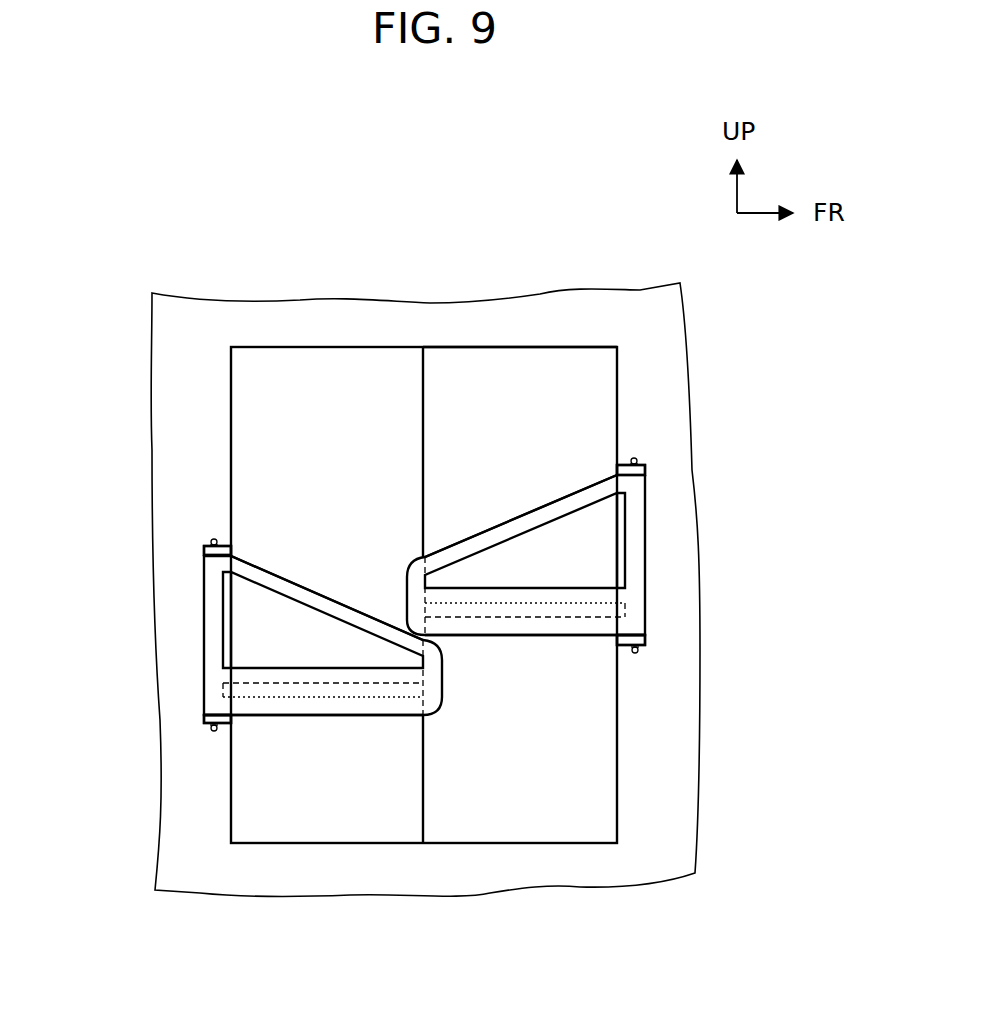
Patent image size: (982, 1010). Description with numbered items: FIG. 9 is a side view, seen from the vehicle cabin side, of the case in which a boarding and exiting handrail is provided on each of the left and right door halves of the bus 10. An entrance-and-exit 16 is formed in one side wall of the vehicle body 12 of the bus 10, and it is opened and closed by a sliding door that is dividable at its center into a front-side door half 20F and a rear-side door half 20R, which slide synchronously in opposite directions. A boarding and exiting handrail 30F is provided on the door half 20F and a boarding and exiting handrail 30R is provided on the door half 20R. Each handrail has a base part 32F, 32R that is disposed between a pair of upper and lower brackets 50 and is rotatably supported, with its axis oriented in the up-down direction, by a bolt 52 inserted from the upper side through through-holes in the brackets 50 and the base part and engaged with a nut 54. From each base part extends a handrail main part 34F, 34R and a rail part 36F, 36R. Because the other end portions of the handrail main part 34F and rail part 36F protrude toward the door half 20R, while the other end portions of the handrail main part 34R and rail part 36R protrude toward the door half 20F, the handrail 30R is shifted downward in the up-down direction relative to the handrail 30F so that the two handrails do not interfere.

The bus 10 is at (203, 236).
The vehicle body 12 is at (603, 280).
The entrance-and-exit 16 is at (617, 815).
The rear-side door half 20R is at (333, 385).
The front-side door half 20F is at (513, 365).
The boarding and exiting handrail 30R is at (231, 610).
The boarding and exiting handrail 30F is at (615, 535).
The base part 32R is at (204, 628).
The base part 32F is at (646, 553).
The handrail main part 34R is at (343, 604).
The handrail main part 34F is at (503, 523).
The rail part 36R is at (320, 718).
The rail part 36F is at (528, 637).
The bracket 50 is at (204, 552).
The bolt 52 is at (213, 540).
The nut 54 is at (212, 731).